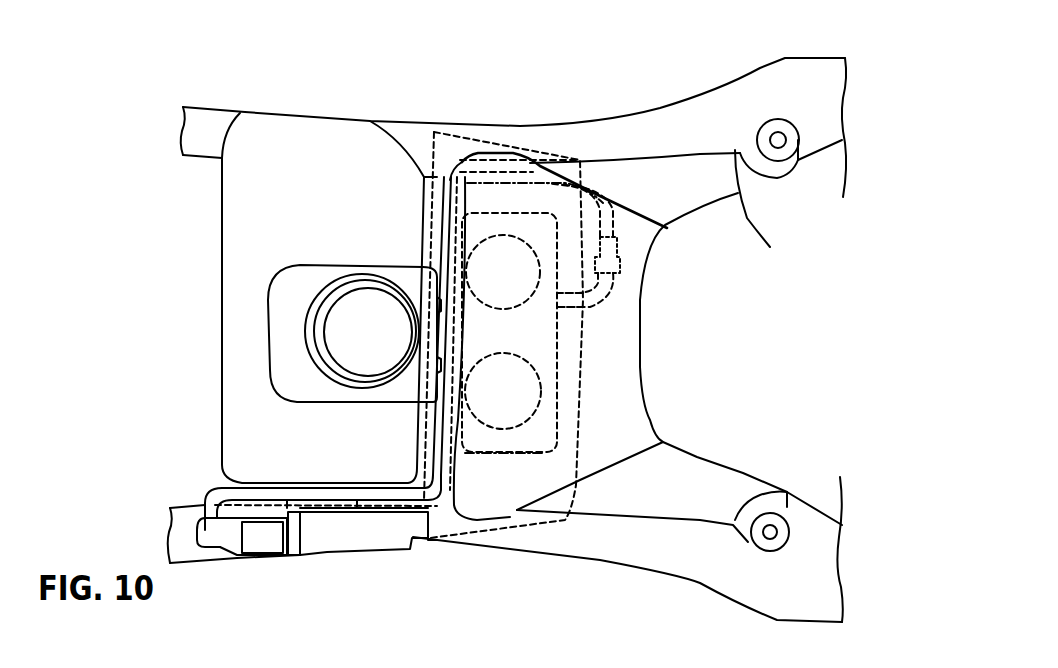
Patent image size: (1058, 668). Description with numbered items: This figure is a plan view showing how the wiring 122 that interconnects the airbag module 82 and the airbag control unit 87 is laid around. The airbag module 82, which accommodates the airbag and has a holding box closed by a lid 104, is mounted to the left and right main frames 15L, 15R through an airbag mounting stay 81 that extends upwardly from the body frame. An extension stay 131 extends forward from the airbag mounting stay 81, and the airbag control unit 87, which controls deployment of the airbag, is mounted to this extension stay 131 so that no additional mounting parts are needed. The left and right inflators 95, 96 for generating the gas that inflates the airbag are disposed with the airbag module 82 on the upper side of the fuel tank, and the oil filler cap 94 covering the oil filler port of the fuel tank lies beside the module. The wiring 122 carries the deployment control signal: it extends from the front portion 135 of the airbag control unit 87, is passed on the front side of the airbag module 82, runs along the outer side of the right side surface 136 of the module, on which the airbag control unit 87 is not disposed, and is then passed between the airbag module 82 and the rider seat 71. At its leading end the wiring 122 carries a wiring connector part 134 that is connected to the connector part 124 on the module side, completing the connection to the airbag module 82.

The rider seat 71 is at (735, 150).
The right main frame 15R is at (205, 128).
The left main frame 15L is at (183, 547).
The oil filler cap 94 is at (355, 335).
The wiring 122 is at (450, 165).
The airbag control unit 87 is at (318, 558).
The front portion of the airbag control unit 135 is at (265, 537).
The extension stay 131 is at (378, 543).
The airbag mounting stay 81 is at (452, 540).
The left inflator 95 is at (495, 430).
The right inflator 96 is at (520, 238).
The lid 104 is at (503, 195).
The right side surface of the airbag module 136 is at (482, 183).
The airbag module 82 is at (528, 183).
The wiring connector part 134 is at (618, 242).
The connector part on the module side 124 is at (622, 252).